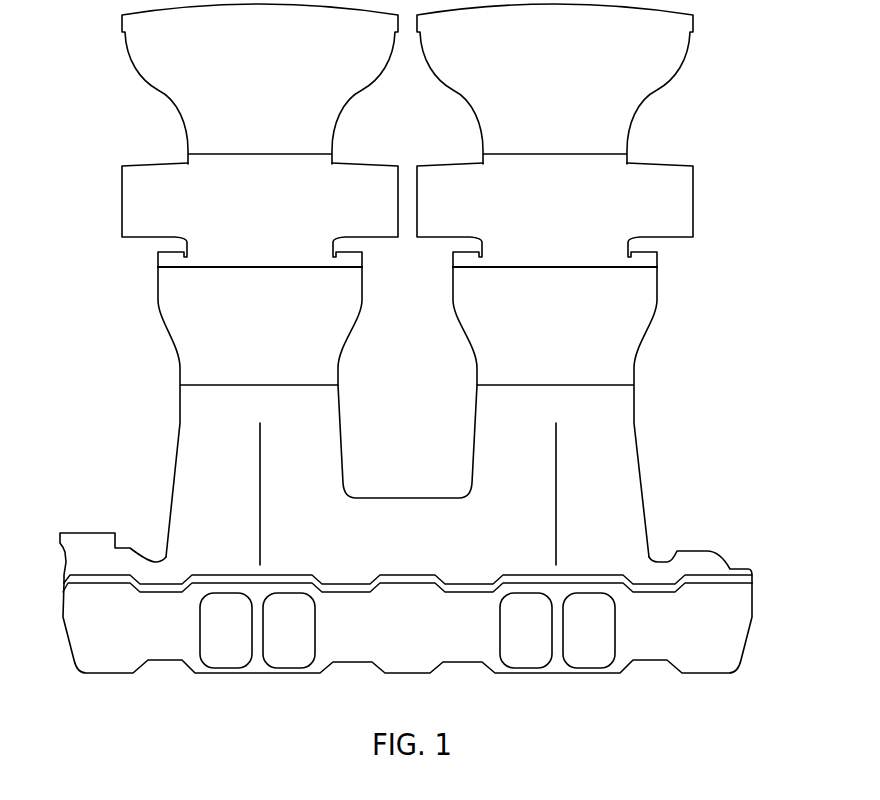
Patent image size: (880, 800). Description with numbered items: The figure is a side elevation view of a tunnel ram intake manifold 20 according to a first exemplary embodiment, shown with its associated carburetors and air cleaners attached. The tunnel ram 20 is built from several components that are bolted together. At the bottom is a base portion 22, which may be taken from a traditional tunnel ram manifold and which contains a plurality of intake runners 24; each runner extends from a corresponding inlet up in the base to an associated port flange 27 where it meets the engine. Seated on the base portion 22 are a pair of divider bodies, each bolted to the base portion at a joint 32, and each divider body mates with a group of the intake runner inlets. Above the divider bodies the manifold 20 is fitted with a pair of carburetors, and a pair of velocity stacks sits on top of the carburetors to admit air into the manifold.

The tunnel ram intake manifold 20 is at (679, 266).
The base portion 22 is at (692, 548).
The intake runners 24 is at (210, 447).
The port flange 27 is at (687, 617).
The joint 32 is at (338, 385).